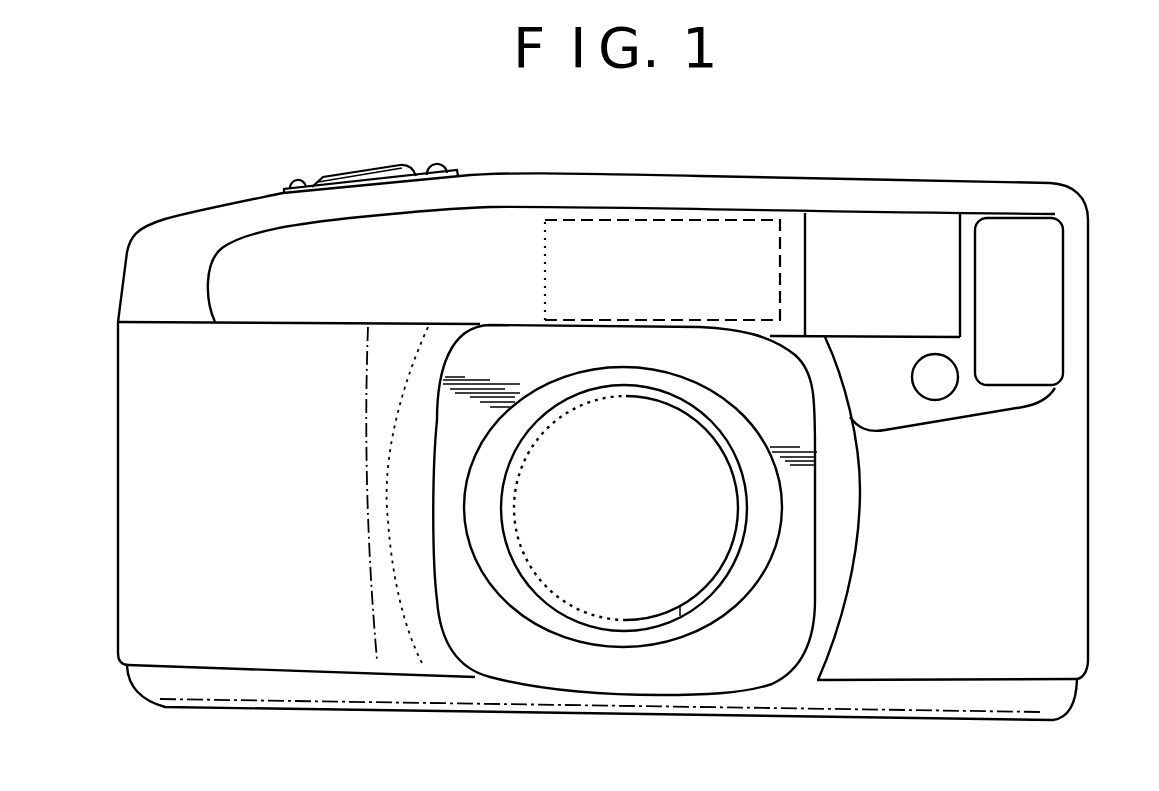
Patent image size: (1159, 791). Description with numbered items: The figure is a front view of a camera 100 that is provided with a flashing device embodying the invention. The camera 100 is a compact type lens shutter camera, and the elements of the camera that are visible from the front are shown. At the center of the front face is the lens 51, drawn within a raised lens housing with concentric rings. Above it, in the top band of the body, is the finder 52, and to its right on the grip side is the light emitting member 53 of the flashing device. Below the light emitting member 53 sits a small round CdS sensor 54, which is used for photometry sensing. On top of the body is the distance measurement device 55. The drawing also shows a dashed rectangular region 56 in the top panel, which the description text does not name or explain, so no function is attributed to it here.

The camera 100 is at (168, 197).
The lens 51 is at (613, 729).
The finder 52 is at (938, 227).
The light emitting member 53 is at (1048, 293).
The CdS sensor 54 is at (927, 404).
The distance measurement device 55 is at (363, 163).
The LCD display 56 is at (680, 232).